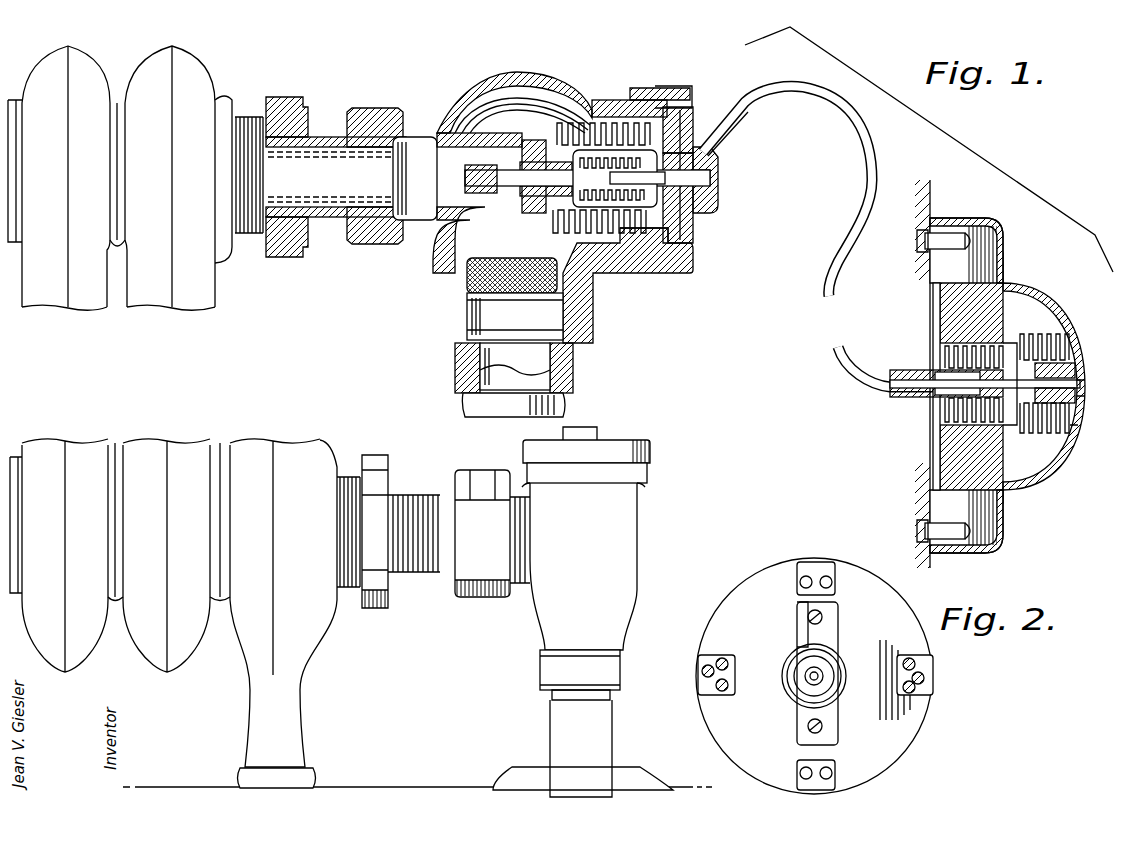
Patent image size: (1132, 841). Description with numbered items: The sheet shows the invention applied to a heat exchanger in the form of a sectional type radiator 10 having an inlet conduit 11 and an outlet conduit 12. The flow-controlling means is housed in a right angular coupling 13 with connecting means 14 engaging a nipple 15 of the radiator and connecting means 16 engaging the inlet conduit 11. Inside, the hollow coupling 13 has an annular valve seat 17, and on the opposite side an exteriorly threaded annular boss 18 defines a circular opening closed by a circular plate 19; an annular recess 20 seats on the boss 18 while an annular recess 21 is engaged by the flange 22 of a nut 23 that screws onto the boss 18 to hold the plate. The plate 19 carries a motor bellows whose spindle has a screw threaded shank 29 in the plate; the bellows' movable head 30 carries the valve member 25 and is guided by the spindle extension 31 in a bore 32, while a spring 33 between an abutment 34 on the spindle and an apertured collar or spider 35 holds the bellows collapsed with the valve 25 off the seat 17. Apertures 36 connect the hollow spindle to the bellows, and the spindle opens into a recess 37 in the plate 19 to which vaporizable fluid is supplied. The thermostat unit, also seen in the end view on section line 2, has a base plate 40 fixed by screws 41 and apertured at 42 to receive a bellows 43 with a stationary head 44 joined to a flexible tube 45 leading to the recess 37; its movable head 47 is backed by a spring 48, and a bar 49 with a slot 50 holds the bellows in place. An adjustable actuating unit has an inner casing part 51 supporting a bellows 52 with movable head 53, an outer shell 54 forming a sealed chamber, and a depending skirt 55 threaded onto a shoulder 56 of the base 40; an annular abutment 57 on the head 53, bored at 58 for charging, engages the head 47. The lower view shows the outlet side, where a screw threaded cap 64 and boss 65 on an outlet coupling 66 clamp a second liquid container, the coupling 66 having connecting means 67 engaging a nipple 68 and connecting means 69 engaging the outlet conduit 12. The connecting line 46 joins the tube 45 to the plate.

In FIG. 1, the sectional type radiator 10 is at (190, 80).
In FIG. 2, the sectional type radiator 10 is at (192, 455).
In FIG. 1, the inlet conduit 11 is at (565, 408).
In FIG. 2, the outlet conduit 12 is at (608, 735).
In FIG. 1, the right angular coupling 13 is at (548, 78).
In FIG. 1, the connecting means 14 is at (390, 114).
In FIG. 1, the nipple 15 is at (334, 124).
In FIG. 1, the connecting means 16 is at (584, 367).
In FIG. 1, the annular valve seat 17 is at (472, 133).
In FIG. 1, the exteriorly threaded annular boss 18 is at (630, 100).
In FIG. 1, the circular plate 19 is at (696, 132).
In FIG. 1, the annular recess 20 is at (648, 88).
In FIG. 1, the annular recess 21 is at (694, 118).
In FIG. 1, the flange 22 is at (692, 106).
In FIG. 1, the nut 23 is at (676, 88).
In FIG. 1, the valve member 25 is at (532, 140).
In FIG. 1, the screw threaded shank 29 is at (698, 145).
In FIG. 1, the movable head 30 is at (515, 140).
In FIG. 1, the extension 31 is at (506, 188).
In FIG. 1, the bore 32 is at (480, 168).
In FIG. 1, the spring 33 is at (612, 207).
In FIG. 1, the abutment 34 is at (560, 118).
In FIG. 1, the apertured collar or spider 35 is at (575, 233).
In FIG. 1, the apertures 36 is at (553, 125).
In FIG. 1, the recess 37 is at (718, 178).
In FIG. 1, the section line 2 is at (921, 565).
In FIG. 1, the base plate 40 is at (938, 325).
In FIG. 2, the base plate 40 is at (874, 765).
In FIG. 1, the screws 41 is at (925, 246).
In FIG. 2, the screws 41 is at (712, 660).
In FIG. 1, the aperture 42 is at (952, 428).
In FIG. 2, the aperture 42 is at (790, 656).
In FIG. 1, the bellows 43 is at (971, 464).
In FIG. 2, the bellows 43 is at (792, 682).
In FIG. 1, the stationary head 44 is at (945, 404).
In FIG. 2, the stationary head 44 is at (797, 690).
In FIG. 1, the tube 45 is at (838, 108).
In FIG. 2, the tube 45 is at (826, 672).
In FIG. 1, the connector 46 is at (722, 163).
In FIG. 1, the movable head 47 is at (1040, 345).
In FIG. 1, the spring 48 is at (971, 298).
In FIG. 1, the bar 49 is at (948, 420).
In FIG. 2, the bar 49 is at (833, 650).
In FIG. 1, the slot 50 is at (940, 364).
In FIG. 2, the slot 50 is at (808, 686).
In FIG. 1, the inner casing part 51 is at (1018, 460).
In FIG. 1, the bellows 52 is at (1042, 430).
In FIG. 1, the movable head 53 is at (1080, 412).
In FIG. 1, the shell 54 is at (1082, 430).
In FIG. 1, the depending skirt 55 is at (1003, 272).
In FIG. 1, the screw threaded shoulder 56 is at (1005, 492).
In FIG. 1, the annular abutment 57 is at (1076, 368).
In FIG. 1, the bore 58 is at (1078, 386).
In FIG. 2, the screw threaded cap 64 is at (650, 462).
In FIG. 2, the boss 65 is at (640, 480).
In FIG. 2, the outlet coupling 66 is at (634, 568).
In FIG. 2, the connecting means 67 is at (478, 478).
In FIG. 2, the nipple 68 is at (420, 490).
In FIG. 2, the connecting means 69 is at (622, 675).